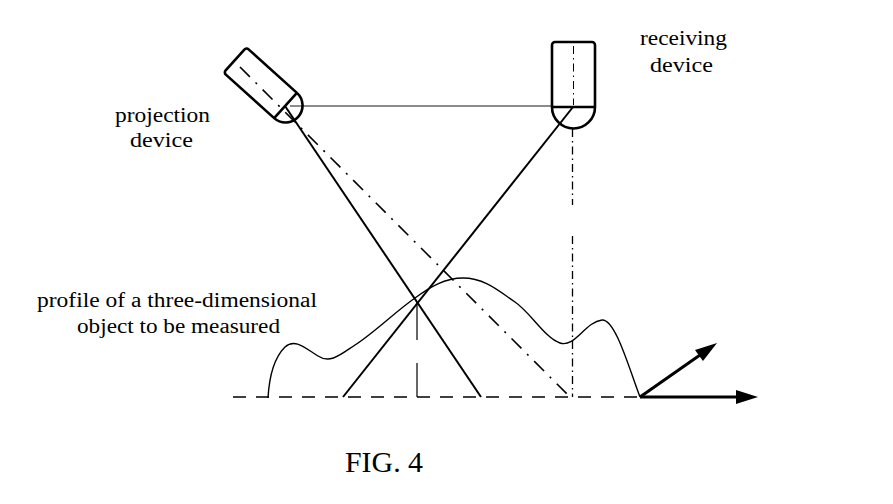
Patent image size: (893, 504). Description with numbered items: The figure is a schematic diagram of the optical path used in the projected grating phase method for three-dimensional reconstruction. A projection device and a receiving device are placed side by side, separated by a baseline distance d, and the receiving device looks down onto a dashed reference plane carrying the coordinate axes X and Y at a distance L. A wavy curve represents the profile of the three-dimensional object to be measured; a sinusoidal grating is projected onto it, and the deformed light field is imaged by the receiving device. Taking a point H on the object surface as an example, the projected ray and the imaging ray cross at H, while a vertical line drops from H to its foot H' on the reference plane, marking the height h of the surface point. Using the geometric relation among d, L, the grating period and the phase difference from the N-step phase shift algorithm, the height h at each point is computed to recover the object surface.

The distance between projection device and receiving device d is at (421, 91).
The distance from receiving device to reference plane L is at (568, 263).
The point on the surface of the object to be measured H is at (390, 342).
The height of point on object surface h is at (416, 353).
The projection of point H onto reference plane H' is at (412, 424).
The X axis X is at (699, 385).
The Y axis Y is at (678, 361).